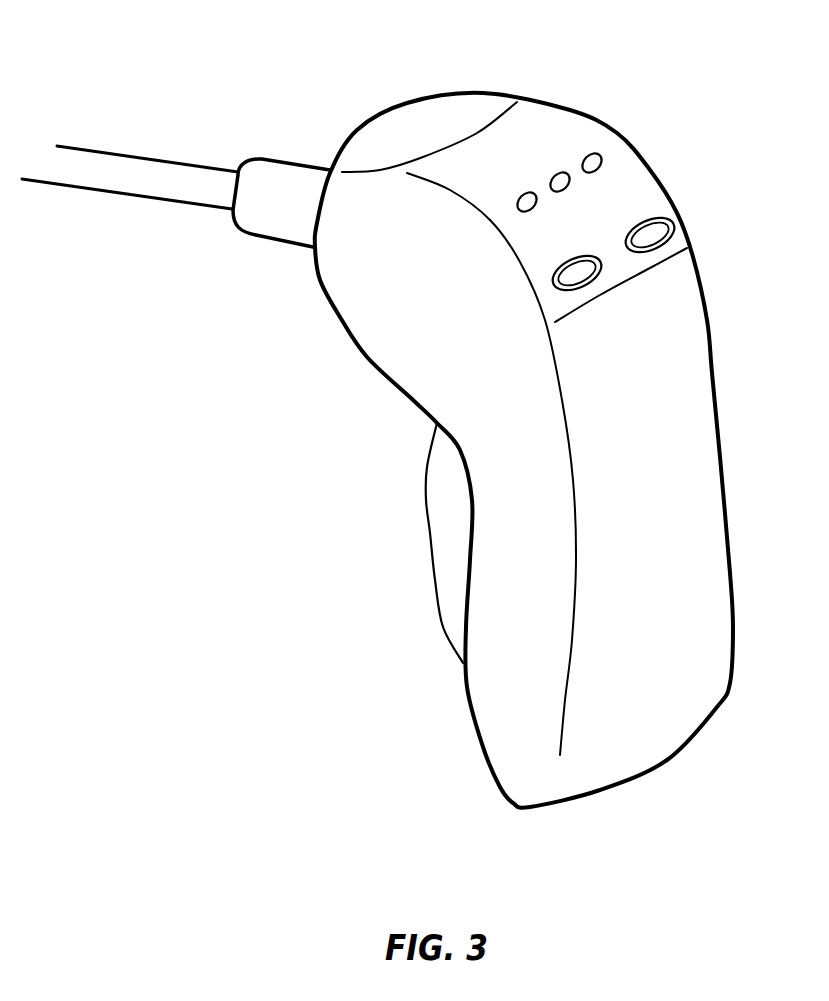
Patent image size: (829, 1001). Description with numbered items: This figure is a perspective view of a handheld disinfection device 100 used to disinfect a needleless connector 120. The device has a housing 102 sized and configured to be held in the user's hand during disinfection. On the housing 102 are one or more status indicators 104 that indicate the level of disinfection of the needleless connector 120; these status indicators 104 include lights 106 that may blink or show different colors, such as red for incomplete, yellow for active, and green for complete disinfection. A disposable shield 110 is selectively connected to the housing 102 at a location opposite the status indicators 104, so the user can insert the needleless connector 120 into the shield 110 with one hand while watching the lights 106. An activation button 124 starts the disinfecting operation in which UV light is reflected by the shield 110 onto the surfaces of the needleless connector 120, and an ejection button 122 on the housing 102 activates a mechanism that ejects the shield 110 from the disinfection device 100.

The disinfection device 100 is at (400, 98).
The housing 102 is at (700, 288).
The status indicators 104 is at (597, 153).
The lights 106 is at (550, 173).
The disposable shield 110 is at (306, 252).
The needleless connector 120 is at (277, 168).
The ejection button 122 is at (568, 270).
The activation button 124 is at (663, 228).